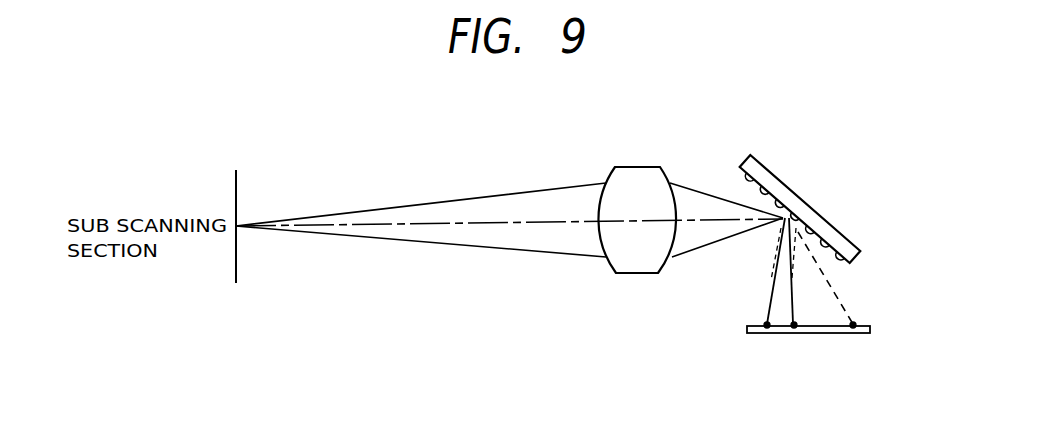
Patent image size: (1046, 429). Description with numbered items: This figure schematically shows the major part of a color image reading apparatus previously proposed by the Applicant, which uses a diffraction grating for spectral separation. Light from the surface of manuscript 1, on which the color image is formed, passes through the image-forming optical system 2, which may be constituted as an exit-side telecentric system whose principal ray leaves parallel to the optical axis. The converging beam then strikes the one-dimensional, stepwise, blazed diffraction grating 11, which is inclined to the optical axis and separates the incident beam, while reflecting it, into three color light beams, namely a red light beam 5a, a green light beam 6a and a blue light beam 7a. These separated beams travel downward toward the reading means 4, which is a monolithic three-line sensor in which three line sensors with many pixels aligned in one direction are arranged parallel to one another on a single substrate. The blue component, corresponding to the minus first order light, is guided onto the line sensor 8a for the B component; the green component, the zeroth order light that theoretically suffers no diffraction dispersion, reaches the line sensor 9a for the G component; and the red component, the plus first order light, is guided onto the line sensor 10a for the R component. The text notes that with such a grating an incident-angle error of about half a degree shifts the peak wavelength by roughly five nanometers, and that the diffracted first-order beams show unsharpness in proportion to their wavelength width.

The surface of manuscript 1 is at (236, 170).
The image-forming optical system 2 is at (647, 165).
The one-dimensional stepwise blazed diffraction grating 11 is at (771, 168).
The red light beam 5a is at (772, 282).
The green light beam 6a is at (792, 305).
The blue light beam 7a is at (836, 289).
The reading means 4 is at (870, 330).
The line sensor for B component 8a is at (768, 335).
The line sensor for G component 9a is at (796, 335).
The line sensor for R component 10a is at (855, 335).